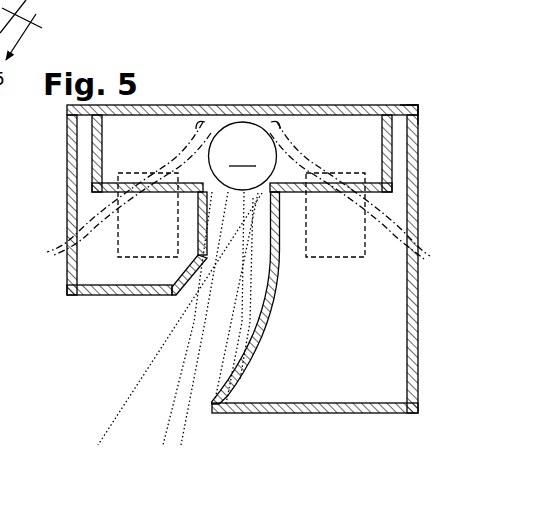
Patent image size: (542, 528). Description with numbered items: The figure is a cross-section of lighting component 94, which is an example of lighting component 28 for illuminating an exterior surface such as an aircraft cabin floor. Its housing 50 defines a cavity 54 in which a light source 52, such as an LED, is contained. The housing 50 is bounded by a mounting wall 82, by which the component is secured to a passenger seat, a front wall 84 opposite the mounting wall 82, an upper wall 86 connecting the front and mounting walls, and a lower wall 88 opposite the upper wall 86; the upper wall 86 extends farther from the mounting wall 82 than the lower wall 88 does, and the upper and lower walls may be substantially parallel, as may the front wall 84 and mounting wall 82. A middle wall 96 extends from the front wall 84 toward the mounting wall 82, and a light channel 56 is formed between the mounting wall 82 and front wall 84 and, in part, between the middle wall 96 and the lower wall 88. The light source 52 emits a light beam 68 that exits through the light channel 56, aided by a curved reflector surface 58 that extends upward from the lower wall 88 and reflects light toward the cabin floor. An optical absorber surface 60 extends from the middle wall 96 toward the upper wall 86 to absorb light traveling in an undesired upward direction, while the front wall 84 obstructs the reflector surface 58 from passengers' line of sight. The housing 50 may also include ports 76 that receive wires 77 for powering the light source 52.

The lighting component 28 is at (436, 49).
The housing 50 is at (242, 264).
The light source 52 is at (243, 156).
The cavity 54 is at (143, 127).
The light channel 56 is at (192, 311).
The reflector surface 58 is at (240, 343).
The optical absorber surface 60 is at (190, 284).
The light beam 68 is at (124, 404).
The port 76 is at (340, 257).
The wire 77 is at (62, 235).
The mounting wall 82 is at (418, 333).
The front wall 84 is at (67, 172).
The upper wall 86 is at (344, 106).
The lower wall 88 is at (328, 413).
The lighting component 94 is at (416, 96).
The middle wall 96 is at (82, 295).